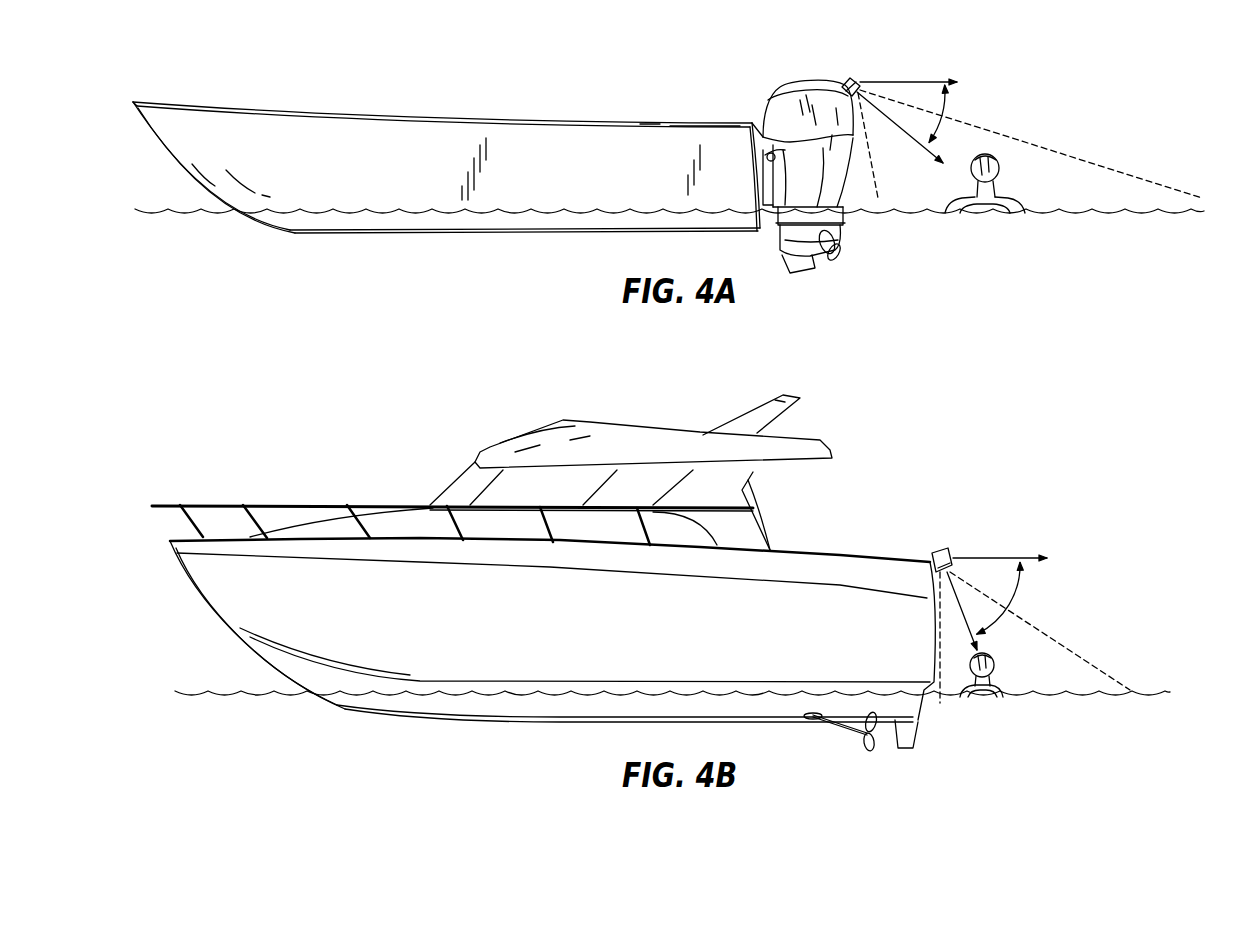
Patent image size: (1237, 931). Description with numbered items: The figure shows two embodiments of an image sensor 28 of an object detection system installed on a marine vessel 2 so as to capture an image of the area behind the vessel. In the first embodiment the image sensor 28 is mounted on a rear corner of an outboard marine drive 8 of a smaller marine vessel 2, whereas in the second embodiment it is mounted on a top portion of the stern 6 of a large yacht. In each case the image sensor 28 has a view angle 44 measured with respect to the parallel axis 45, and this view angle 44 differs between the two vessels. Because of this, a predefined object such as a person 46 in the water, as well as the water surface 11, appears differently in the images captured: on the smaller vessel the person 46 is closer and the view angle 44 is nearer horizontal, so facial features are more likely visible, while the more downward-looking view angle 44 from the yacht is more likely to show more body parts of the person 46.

In FIG. 4A, the marine vessel 2 is at (558, 120).
In FIG. 4B, the marine vessel 2 is at (825, 552).
In FIG. 4A, the stern 6 is at (757, 120).
In FIG. 4B, the stern 6 is at (935, 607).
In FIG. 4A, the outboard marine drive 8 is at (810, 80).
In FIG. 4A, the water surface 11 is at (180, 212).
In FIG. 4B, the water surface 11 is at (240, 695).
In FIG. 4A, the image sensor 28 is at (851, 78).
In FIG. 4B, the image sensor 28 is at (943, 548).
In FIG. 4A, the view angle 44 is at (940, 112).
In FIG. 4B, the view angle 44 is at (1012, 588).
In FIG. 4A, the parallel axis 45 is at (912, 82).
In FIG. 4B, the parallel axis 45 is at (998, 558).
In FIG. 4A, the person 46 is at (1000, 162).
In FIG. 4B, the person 46 is at (993, 660).